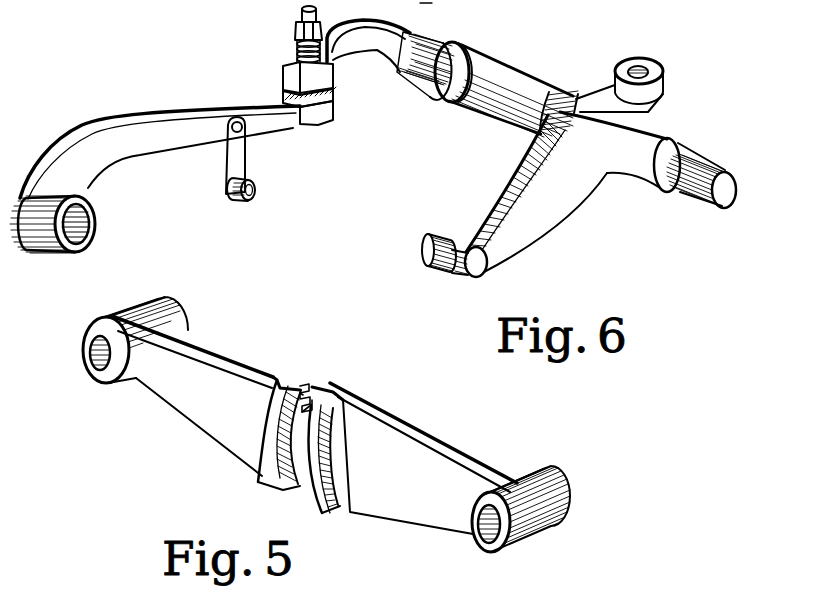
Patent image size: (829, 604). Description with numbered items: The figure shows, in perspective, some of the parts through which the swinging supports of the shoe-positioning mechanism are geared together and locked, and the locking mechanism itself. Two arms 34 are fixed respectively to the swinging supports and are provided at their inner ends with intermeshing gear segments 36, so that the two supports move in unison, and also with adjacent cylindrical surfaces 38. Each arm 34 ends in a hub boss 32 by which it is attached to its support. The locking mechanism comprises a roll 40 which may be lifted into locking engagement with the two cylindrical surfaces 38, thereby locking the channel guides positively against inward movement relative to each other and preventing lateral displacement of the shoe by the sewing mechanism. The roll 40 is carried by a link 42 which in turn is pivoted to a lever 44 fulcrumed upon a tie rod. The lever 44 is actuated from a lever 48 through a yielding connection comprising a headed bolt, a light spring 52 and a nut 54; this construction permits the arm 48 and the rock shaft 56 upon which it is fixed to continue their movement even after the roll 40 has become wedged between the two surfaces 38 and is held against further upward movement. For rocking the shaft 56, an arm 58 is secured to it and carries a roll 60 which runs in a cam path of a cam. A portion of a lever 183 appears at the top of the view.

In FIG. 5, the hub boss 32 is at (112, 320).
In FIG. 5, the arm 34 is at (222, 370).
In FIG. 5, the intermeshing gear segment 36 is at (327, 387).
In FIG. 5, the cylindrical surface 38 is at (313, 490).
In FIG. 6, the roll 40 is at (235, 194).
In FIG. 6, the link 42 is at (242, 148).
In FIG. 6, the lever 44 is at (178, 142).
In FIG. 6, the lever 48 is at (376, 44).
In FIG. 6, the light spring 52 is at (297, 53).
In FIG. 6, the nut 54 is at (298, 31).
In FIG. 6, the rock shaft 56 is at (481, 73).
In FIG. 6, the arm 58 is at (524, 196).
In FIG. 6, the roll 60 is at (432, 240).
In FIG. 6, the lever 183 is at (448, 11).